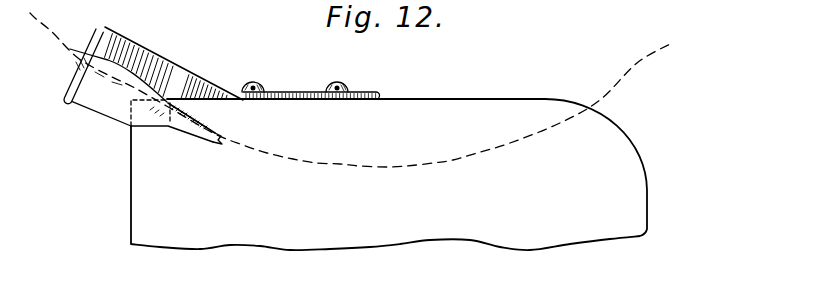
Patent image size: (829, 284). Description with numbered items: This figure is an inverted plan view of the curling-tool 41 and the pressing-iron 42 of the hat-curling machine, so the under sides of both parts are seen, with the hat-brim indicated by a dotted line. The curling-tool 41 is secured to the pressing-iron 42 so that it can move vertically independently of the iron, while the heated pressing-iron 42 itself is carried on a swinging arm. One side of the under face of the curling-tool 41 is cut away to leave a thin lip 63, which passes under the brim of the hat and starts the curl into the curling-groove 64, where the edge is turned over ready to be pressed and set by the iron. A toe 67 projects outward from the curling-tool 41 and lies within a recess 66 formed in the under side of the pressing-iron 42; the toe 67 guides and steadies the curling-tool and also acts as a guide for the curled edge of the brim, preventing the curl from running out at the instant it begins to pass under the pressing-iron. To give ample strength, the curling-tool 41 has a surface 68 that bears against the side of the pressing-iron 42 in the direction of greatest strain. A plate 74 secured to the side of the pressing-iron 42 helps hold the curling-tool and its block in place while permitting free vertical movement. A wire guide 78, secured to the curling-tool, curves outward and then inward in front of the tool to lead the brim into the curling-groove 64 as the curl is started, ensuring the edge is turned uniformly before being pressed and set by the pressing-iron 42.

The curling-tool 41 is at (115, 31).
The pressing-iron 42 is at (389, 174).
The thin lip 63 is at (108, 105).
The curling-groove 64 is at (168, 100).
The recess 66 is at (190, 141).
The toe 67 is at (214, 148).
The surface 68 is at (233, 94).
The plate 74 is at (307, 92).
The guide 78 is at (67, 89).